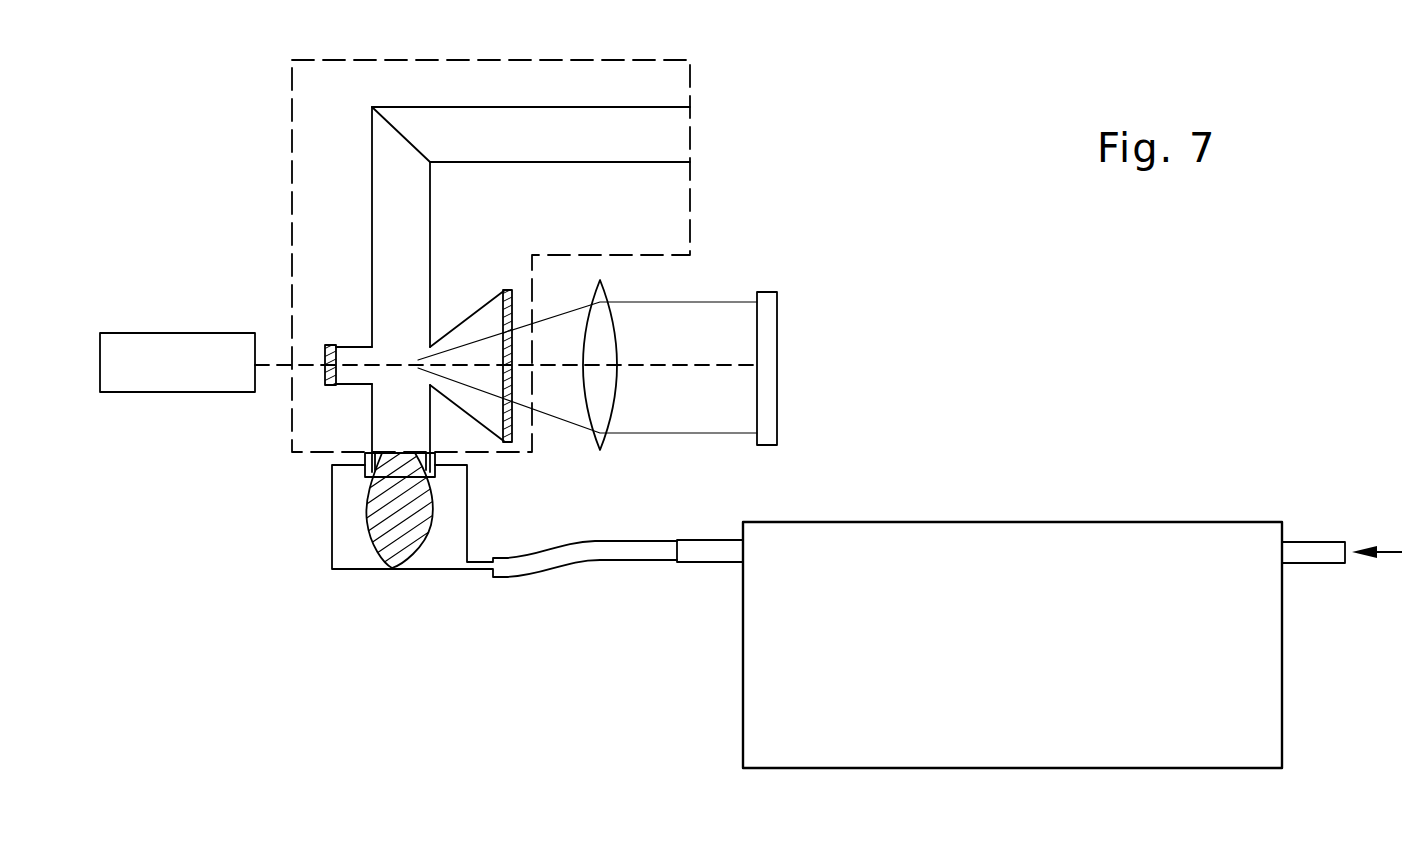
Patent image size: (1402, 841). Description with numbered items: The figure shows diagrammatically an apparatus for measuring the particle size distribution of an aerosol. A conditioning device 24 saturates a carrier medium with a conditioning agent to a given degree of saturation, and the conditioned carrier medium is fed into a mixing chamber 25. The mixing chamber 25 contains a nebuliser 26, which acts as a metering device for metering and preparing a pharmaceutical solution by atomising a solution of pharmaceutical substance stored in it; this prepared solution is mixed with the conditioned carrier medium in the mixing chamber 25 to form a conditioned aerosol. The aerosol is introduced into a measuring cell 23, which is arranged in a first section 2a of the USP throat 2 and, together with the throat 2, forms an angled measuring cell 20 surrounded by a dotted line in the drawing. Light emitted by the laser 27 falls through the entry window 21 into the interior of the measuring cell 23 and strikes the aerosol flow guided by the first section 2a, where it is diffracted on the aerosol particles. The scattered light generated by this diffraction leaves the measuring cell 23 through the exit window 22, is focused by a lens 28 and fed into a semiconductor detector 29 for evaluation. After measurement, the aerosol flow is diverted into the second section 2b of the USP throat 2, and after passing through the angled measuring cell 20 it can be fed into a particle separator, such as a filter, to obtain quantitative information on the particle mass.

The angled measuring cell 20 is at (258, 77).
The USP throat 2 is at (454, 178).
The first section of the USP throat 2a is at (405, 252).
The second section of the USP throat 2b is at (612, 135).
The entry window 21 is at (320, 343).
The exit window 22 is at (517, 423).
The measuring cell 23 is at (410, 382).
The conditioning device 24 is at (983, 655).
The mixing chamber 25 is at (343, 533).
The nebuliser 26 is at (400, 535).
The laser 27 is at (157, 355).
The lens 28 is at (602, 398).
The semiconductor detector 29 is at (767, 340).